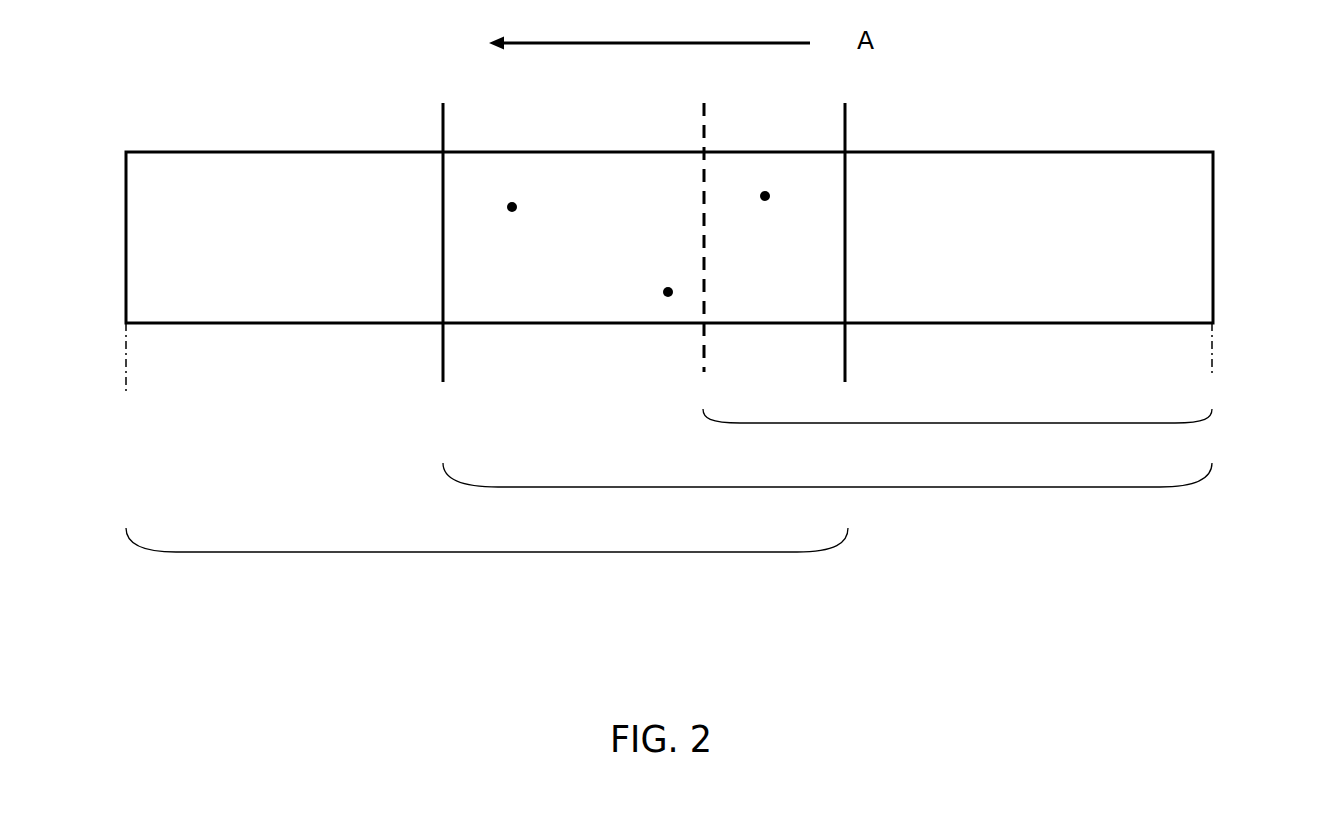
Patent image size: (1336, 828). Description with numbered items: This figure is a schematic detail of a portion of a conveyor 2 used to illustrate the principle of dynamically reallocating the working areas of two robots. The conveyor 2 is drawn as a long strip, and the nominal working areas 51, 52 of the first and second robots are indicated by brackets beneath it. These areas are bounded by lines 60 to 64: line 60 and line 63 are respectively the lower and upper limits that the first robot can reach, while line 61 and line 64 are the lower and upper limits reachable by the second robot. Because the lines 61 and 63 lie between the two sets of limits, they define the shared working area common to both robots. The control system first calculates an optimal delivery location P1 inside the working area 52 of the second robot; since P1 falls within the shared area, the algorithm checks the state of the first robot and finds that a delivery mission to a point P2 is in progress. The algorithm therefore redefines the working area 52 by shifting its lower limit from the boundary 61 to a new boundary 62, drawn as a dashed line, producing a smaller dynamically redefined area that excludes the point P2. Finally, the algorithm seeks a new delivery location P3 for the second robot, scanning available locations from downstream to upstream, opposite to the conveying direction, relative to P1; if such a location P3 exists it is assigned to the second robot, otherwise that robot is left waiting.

The conveyor 2 is at (1071, 165).
The nominal working area 51 is at (420, 580).
The nominal working area 52 is at (1010, 506).
The line 60 is at (126, 370).
The line 61 is at (443, 360).
The new boundary 62 is at (704, 342).
The line 63 is at (845, 350).
The line 64 is at (1213, 358).
The optimal delivery location P1 is at (515, 204).
The delivery point P2 is at (666, 297).
The new delivery location P3 is at (768, 192).